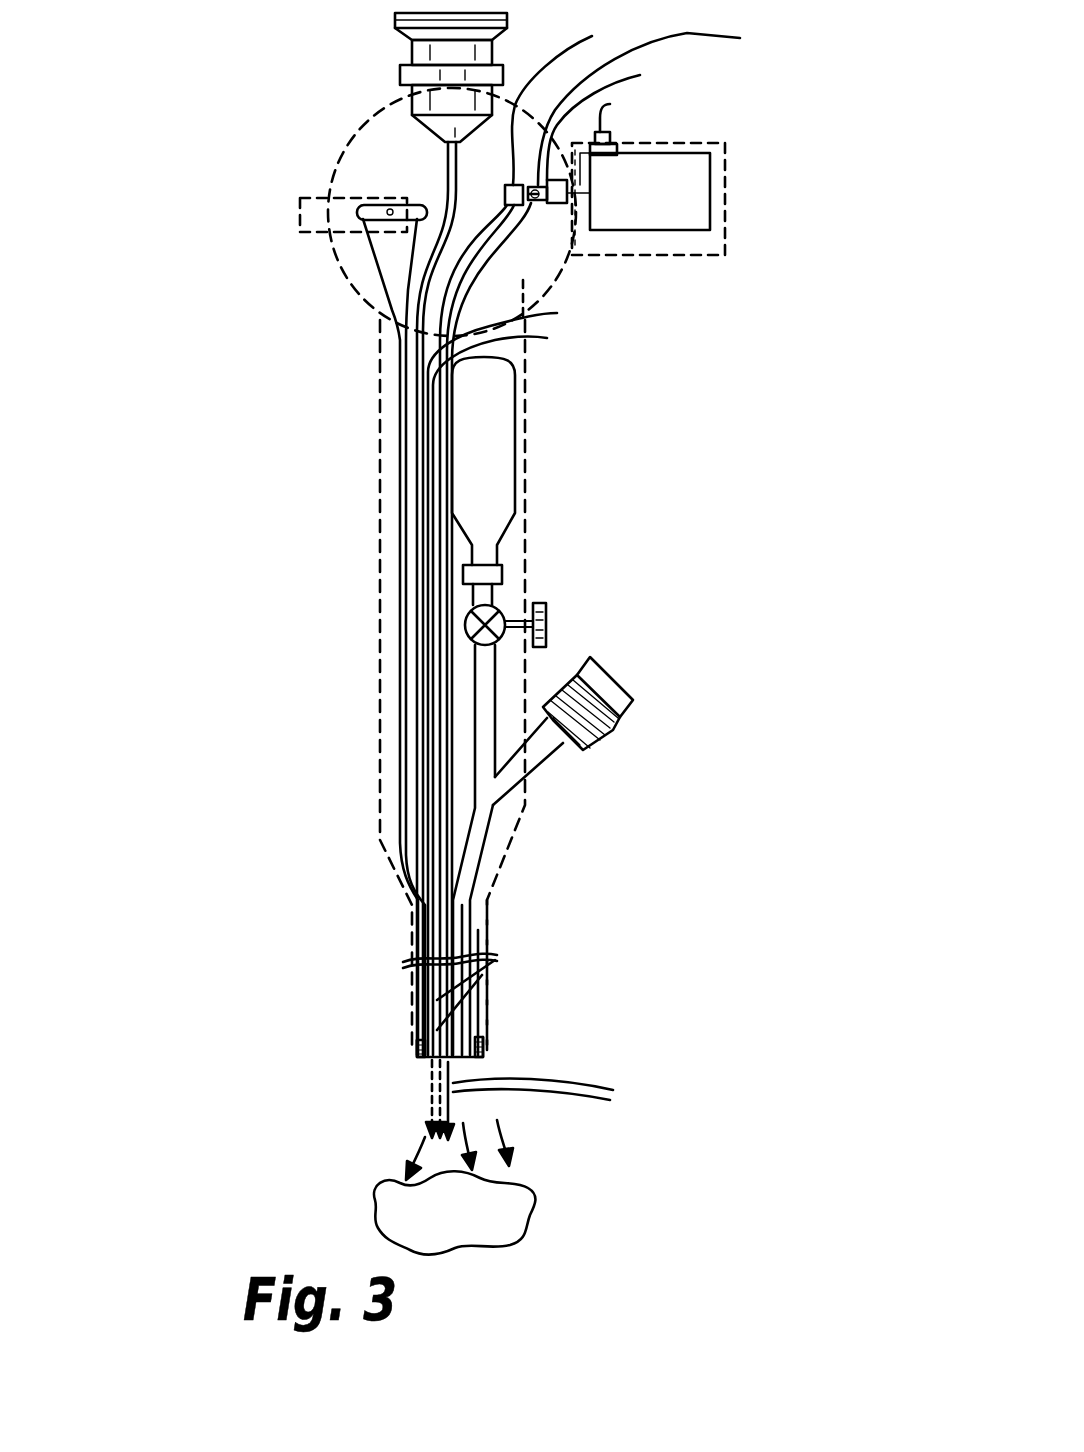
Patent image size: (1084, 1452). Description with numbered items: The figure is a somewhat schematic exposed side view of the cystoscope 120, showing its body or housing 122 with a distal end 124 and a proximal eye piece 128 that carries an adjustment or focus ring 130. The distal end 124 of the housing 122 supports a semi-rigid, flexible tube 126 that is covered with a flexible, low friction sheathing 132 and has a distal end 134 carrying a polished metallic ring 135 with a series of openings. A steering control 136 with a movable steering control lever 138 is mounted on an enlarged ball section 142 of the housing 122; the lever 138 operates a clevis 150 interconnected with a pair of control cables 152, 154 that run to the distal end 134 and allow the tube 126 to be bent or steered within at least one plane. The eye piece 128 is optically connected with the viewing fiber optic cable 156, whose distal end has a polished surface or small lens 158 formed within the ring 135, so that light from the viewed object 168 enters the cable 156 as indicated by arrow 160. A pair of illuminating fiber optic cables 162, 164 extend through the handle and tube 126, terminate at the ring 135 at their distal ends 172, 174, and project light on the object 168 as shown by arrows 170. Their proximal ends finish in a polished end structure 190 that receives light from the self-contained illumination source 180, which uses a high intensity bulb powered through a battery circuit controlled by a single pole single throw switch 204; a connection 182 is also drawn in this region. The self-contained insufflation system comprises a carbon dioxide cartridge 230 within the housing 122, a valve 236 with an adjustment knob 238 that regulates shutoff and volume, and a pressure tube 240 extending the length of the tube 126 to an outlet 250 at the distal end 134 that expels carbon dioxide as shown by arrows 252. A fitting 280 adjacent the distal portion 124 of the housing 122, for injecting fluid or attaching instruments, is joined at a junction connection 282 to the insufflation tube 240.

The cystoscope 120 is at (551, 521).
The housing 122 is at (384, 715).
The distal end 124 is at (511, 847).
The tube 126 is at (489, 986).
The eye piece 128 is at (397, 93).
The focus ring 130 is at (505, 63).
The sheathing 132 is at (410, 1028).
The distal end 134 is at (489, 1013).
The polished metallic ring 135 is at (487, 1060).
The steering control 136 is at (332, 245).
The steering control lever 138 is at (300, 212).
The enlarged ball section 142 is at (666, 108).
The clevis 150 is at (397, 205).
The control cable 152 is at (398, 284).
The control cable 154 is at (388, 285).
The viewing fiber optic cable 156 is at (447, 160).
The lens 158 is at (416, 1071).
The arrow 160 is at (430, 1066).
The illuminating fiber optic cable 162 is at (495, 962).
The illuminating fiber optic cable 164 is at (488, 952).
The object 168 is at (523, 1213).
The arrows 170 is at (566, 1090).
The distal end 172 is at (490, 1027).
The distal end 174 is at (490, 1043).
The illumination source 180 is at (672, 147).
The cable 182 is at (619, 121).
The polished end structure 190 is at (576, 102).
The single pole single throw switch 204 is at (629, 119).
The CO2 cartridge 230 is at (500, 468).
The valve 236 is at (552, 613).
The adjustment knob 238 is at (548, 628).
The pressure tube 240 is at (493, 707).
The outlet 250 is at (479, 1075).
The arrows 252 is at (470, 1135).
The fitting 280 is at (607, 734).
The junction connection 282 is at (499, 806).